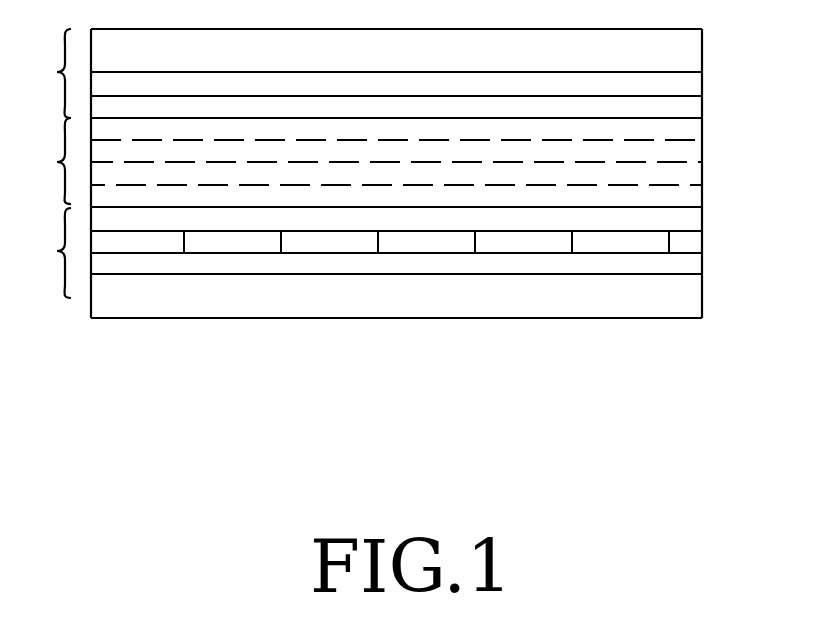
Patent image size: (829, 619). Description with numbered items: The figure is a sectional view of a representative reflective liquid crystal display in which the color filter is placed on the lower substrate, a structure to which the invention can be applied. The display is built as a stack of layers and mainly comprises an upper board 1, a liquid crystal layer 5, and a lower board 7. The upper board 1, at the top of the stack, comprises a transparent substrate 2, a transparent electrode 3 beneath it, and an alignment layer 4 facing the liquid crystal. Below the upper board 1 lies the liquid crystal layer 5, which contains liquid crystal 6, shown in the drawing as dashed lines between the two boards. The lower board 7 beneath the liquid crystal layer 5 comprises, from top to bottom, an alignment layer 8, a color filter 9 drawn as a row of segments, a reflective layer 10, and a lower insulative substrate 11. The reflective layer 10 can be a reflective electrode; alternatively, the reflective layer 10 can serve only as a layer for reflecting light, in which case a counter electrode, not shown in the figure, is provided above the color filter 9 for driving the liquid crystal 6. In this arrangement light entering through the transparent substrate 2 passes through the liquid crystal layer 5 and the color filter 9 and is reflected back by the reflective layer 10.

The upper board 1 is at (49, 73).
The transparent substrate 2 is at (702, 48).
The transparent electrode 3 is at (702, 86).
The alignment layer 4 is at (702, 105).
The liquid crystal layer 5 is at (49, 161).
The liquid crystal 6 is at (660, 160).
The lower board 7 is at (50, 253).
The alignment layer 8 is at (702, 215).
The color filter 9 is at (702, 241).
The reflective layer 10 is at (702, 263).
The lower insulative substrate 11 is at (702, 300).